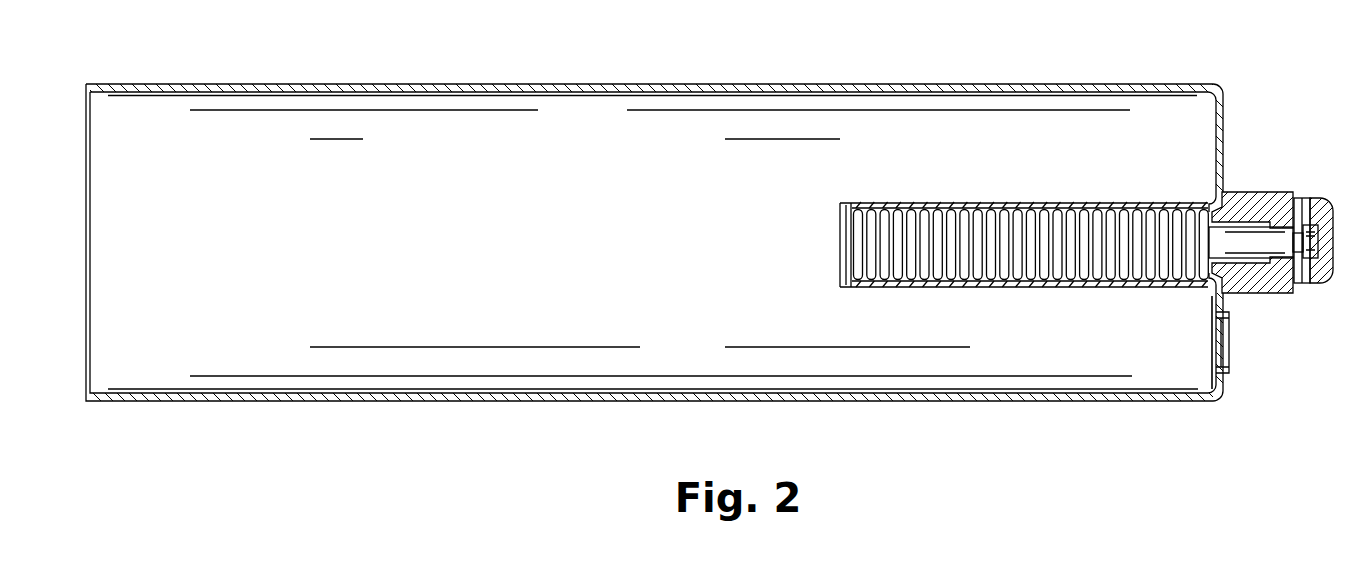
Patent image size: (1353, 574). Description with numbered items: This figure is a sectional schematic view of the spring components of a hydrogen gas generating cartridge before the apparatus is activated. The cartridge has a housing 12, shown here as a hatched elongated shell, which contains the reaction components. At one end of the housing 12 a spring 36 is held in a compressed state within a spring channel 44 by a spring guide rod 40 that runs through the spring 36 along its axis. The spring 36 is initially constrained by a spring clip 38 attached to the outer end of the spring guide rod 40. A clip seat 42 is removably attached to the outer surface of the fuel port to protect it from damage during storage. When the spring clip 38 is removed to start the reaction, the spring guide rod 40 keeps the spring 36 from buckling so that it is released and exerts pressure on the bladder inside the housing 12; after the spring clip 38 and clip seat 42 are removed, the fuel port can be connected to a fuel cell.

The housing 12 is at (590, 403).
The spring 36 is at (1015, 240).
The spring clip 38 is at (1320, 201).
The spring guide rod 40 is at (838, 239).
The clip seat 42 is at (1262, 192).
The spring channel 44 is at (1102, 288).